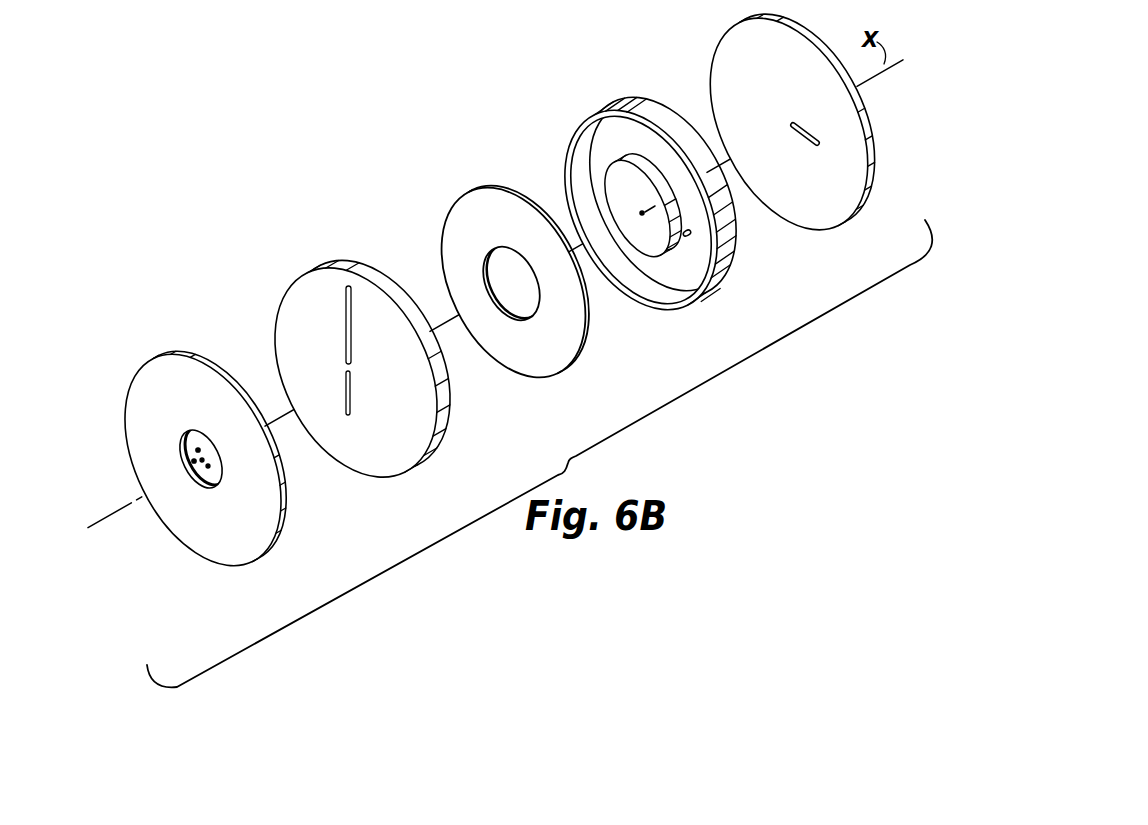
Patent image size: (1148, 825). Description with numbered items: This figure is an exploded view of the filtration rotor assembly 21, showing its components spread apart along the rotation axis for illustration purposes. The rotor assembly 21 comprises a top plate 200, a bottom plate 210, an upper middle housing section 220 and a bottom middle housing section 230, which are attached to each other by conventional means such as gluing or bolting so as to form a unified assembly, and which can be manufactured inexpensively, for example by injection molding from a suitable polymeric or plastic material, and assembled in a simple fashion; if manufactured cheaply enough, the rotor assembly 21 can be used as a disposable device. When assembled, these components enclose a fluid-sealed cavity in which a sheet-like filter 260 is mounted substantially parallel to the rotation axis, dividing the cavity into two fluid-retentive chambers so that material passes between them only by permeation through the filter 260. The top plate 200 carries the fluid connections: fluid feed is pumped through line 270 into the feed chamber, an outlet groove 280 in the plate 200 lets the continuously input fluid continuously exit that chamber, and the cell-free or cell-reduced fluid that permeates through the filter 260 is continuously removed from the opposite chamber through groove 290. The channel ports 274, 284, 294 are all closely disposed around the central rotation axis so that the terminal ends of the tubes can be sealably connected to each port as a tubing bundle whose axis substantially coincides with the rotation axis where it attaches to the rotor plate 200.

The filtration rotor assembly 21 is at (387, 209).
The top plate 200 is at (260, 554).
The bottom plate 210 is at (858, 213).
The upper middle housing section 220 is at (430, 456).
The bottom middle housing section 230 is at (710, 298).
The filter 260 is at (558, 360).
The line 270 is at (345, 399).
The channel port 274 is at (193, 461).
The outlet groove 280 is at (346, 318).
The channel port 284 is at (198, 450).
The groove 290 is at (642, 215).
The channel port 294 is at (208, 466).